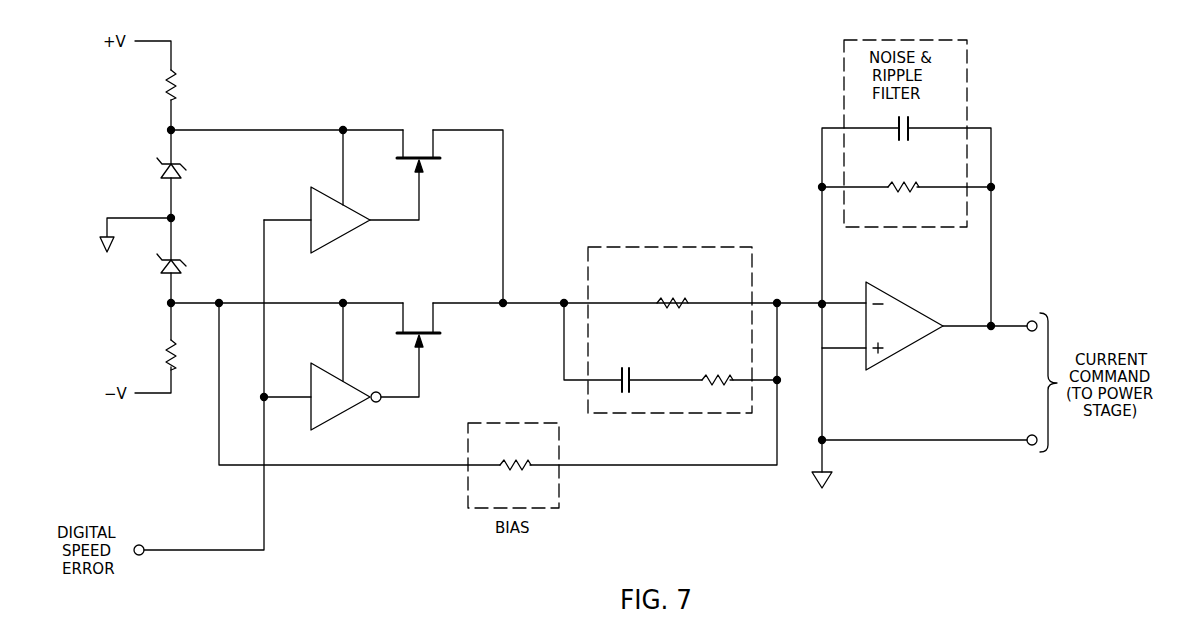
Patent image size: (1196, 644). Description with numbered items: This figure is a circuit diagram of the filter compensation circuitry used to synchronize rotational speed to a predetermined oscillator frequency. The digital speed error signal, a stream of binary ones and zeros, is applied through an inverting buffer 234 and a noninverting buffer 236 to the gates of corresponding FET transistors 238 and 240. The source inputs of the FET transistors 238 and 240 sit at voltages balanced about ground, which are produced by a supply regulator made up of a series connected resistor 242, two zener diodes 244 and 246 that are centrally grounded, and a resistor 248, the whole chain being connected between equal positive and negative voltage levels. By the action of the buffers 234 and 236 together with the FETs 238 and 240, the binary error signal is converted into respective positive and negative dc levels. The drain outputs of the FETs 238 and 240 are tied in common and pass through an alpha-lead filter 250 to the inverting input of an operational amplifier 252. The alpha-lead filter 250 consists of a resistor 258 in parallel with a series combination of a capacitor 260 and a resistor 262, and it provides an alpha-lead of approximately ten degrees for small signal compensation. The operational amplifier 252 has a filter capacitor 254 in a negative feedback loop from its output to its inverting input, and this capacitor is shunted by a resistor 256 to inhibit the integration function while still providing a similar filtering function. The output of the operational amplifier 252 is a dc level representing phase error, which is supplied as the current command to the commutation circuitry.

The buffer 234 is at (337, 227).
The buffer 236 is at (337, 405).
The FET transistor 238 is at (419, 143).
The FET transistor 240 is at (419, 318).
The resistor 242 is at (165, 88).
The zener diode 244 is at (180, 172).
The zener diode 246 is at (180, 268).
The resistor 248 is at (165, 356).
The alpha-lead filter 250 is at (630, 246).
The operational amplifier 252 is at (910, 337).
The filter capacitor 254 is at (906, 142).
The resistor 256 is at (904, 194).
The resistor 258 is at (676, 298).
The capacitor 260 is at (626, 368).
The resistor 262 is at (714, 372).